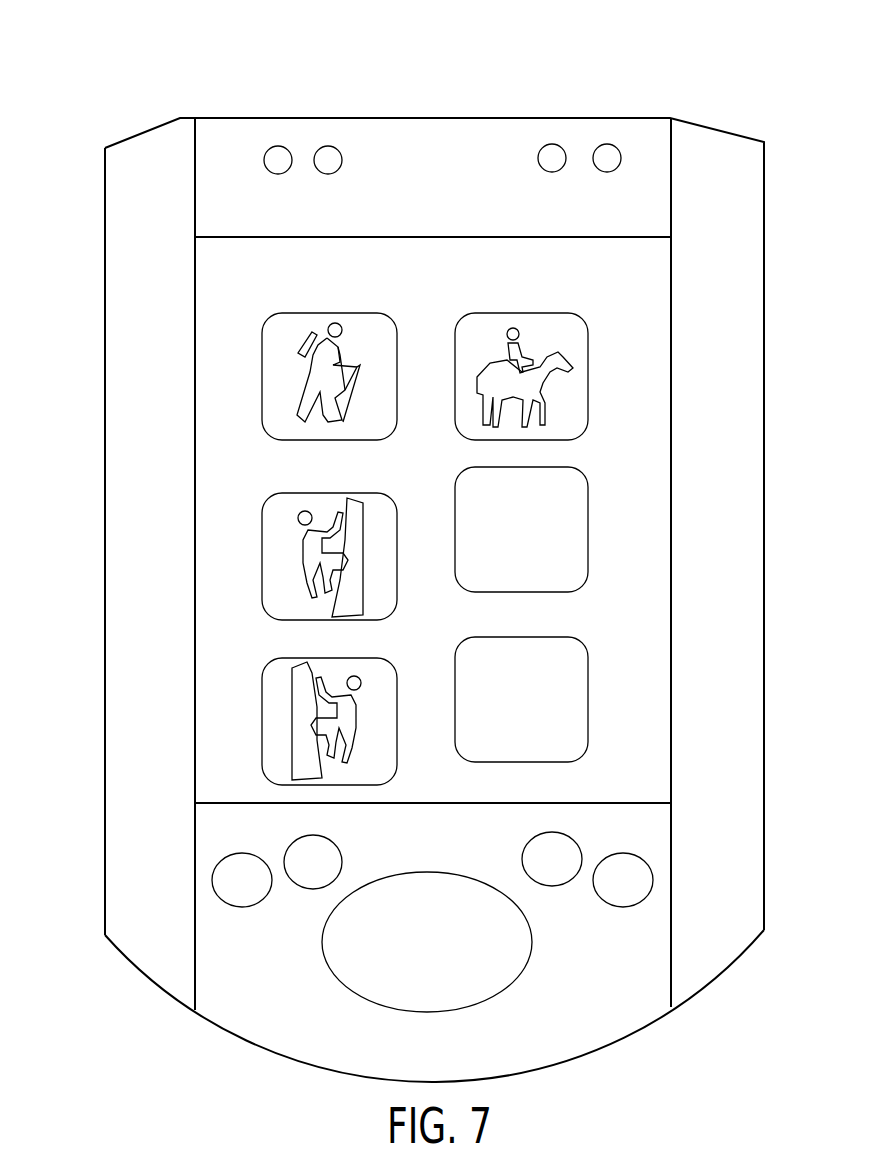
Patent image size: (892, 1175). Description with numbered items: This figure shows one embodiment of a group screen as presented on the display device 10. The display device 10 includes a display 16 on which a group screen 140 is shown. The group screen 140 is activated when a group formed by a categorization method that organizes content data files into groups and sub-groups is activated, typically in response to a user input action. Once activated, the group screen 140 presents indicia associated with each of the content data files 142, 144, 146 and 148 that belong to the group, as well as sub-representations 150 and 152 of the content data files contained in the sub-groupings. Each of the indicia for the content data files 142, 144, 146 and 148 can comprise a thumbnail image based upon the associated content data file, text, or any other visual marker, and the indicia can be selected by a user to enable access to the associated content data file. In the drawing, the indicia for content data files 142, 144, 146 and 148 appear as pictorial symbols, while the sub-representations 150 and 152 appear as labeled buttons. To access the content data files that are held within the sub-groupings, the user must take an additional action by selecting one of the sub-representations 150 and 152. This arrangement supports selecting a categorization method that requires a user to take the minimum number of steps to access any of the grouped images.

The display device 10 is at (427, 118).
The display 16 is at (195, 487).
The group screen 140 is at (657, 285).
The content data file 142 is at (262, 353).
The content data file 144 is at (262, 553).
The content data file 146 is at (262, 720).
The content data file 148 is at (590, 375).
The sub-representation 150 is at (588, 498).
The sub-representation 152 is at (588, 668).